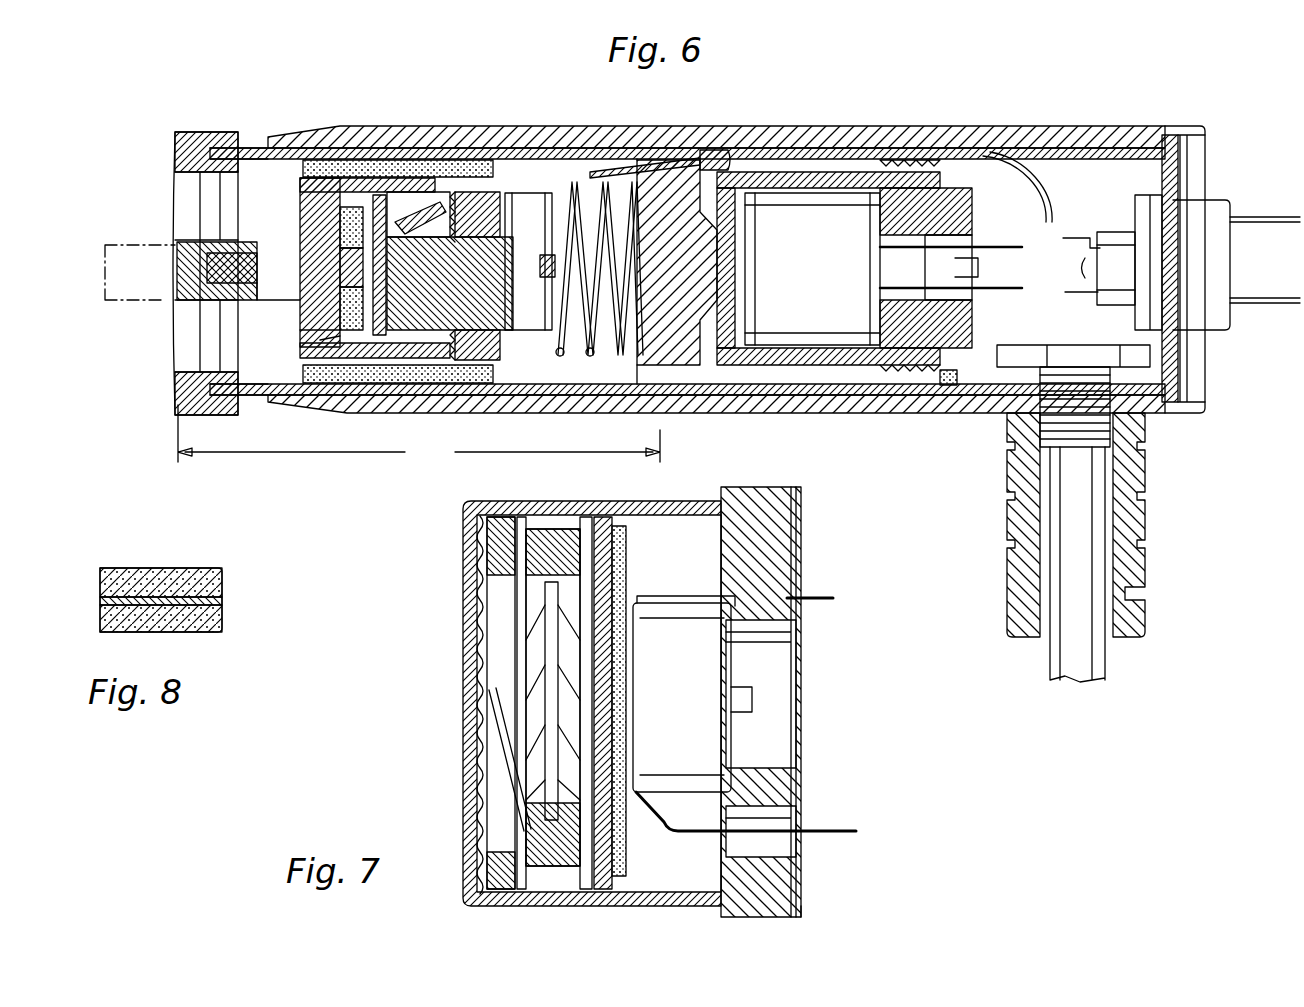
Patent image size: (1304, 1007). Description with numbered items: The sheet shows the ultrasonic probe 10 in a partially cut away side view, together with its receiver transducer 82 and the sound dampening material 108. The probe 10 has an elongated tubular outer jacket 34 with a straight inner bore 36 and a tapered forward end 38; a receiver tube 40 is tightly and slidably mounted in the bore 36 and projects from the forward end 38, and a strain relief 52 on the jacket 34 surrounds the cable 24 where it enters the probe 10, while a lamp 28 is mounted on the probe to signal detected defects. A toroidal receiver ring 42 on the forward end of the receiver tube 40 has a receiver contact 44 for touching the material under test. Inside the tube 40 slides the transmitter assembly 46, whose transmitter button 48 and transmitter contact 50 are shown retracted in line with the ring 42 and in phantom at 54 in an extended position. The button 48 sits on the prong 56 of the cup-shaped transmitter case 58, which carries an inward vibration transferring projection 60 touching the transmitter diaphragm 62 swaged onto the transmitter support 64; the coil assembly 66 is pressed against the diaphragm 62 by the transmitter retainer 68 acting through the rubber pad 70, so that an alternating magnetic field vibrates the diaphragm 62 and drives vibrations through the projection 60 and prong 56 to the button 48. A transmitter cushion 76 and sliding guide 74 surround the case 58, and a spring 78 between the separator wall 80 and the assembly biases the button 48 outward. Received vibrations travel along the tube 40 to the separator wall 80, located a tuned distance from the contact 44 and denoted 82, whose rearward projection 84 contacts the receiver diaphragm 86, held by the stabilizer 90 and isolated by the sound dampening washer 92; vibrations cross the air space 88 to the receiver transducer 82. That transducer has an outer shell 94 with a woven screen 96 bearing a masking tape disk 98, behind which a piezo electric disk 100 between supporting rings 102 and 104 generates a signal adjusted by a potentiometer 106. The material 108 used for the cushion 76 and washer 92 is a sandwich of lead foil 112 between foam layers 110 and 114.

In FIG. 6, the probe 10 is at (944, 86).
In FIG. 6, the cable 24 is at (1098, 660).
In FIG. 6, the lamp 28 is at (1275, 217).
In FIG. 6, the outer jacket 34 is at (778, 126).
In FIG. 6, the inner bore 36 is at (270, 148).
In FIG. 6, the tapered forward end 38 is at (340, 126).
In FIG. 6, the receiver tube 40 is at (250, 148).
In FIG. 6, the receiver ring 42 is at (178, 132).
In FIG. 6, the receiver contact 44 is at (175, 145).
In FIG. 6, the transmitter assembly 46 is at (300, 230).
In FIG. 6, the transmitter button 48 is at (185, 242).
In FIG. 6, the transmitter contact 50 is at (207, 260).
In FIG. 6, the strain relief 52 is at (1145, 512).
In FIG. 6, the extended position of transmitter button 54 is at (135, 300).
In FIG. 6, the prong 56 is at (290, 290).
In FIG. 6, the transmitter case 58 is at (340, 320).
In FIG. 6, the vibration transferring projection 60 is at (322, 340).
In FIG. 6, the transmitter diaphragm 62 is at (373, 232).
In FIG. 6, the transmitter support 64 is at (300, 192).
In FIG. 6, the coil assembly 66 is at (400, 290).
In FIG. 6, the transmitter retainer 68 is at (468, 292).
In FIG. 6, the rubber pad 70 is at (400, 226).
In FIG. 6, the sliding guide 74 is at (527, 160).
In FIG. 6, the transmitter cushion 76 is at (565, 175).
In FIG. 6, the spring 78 is at (590, 362).
In FIG. 6, the separator wall 80 is at (690, 365).
In FIG. 6, the receiver transducer 82 is at (803, 282).
In FIG. 7, the receiver transducer 82 is at (854, 879).
In FIG. 6, the projection 84 is at (706, 281).
In FIG. 6, the receiver diaphragm 86 is at (740, 311).
In FIG. 6, the air space 88 is at (755, 228).
In FIG. 6, the stabilizer 90 is at (975, 400).
In FIG. 6, the sound dampening washer 92 is at (948, 386).
In FIG. 7, the outer shell 94 is at (801, 492).
In FIG. 7, the woven screen 96 is at (487, 582).
In FIG. 7, the masking tape disk 98 is at (492, 716).
In FIG. 7, the disk of piezo electric material 100 is at (610, 855).
In FIG. 7, the supporting ring 102 is at (519, 832).
In FIG. 7, the supporting ring 104 is at (562, 822).
In FIG. 7, the potentiometer 106 is at (752, 662).
In FIG. 8, the sound dampening material 108 is at (243, 558).
In FIG. 8, the plastic foam layer 110 is at (242, 583).
In FIG. 8, the lead foil 112 is at (242, 607).
In FIG. 8, the plastic foam layer 114 is at (238, 635).